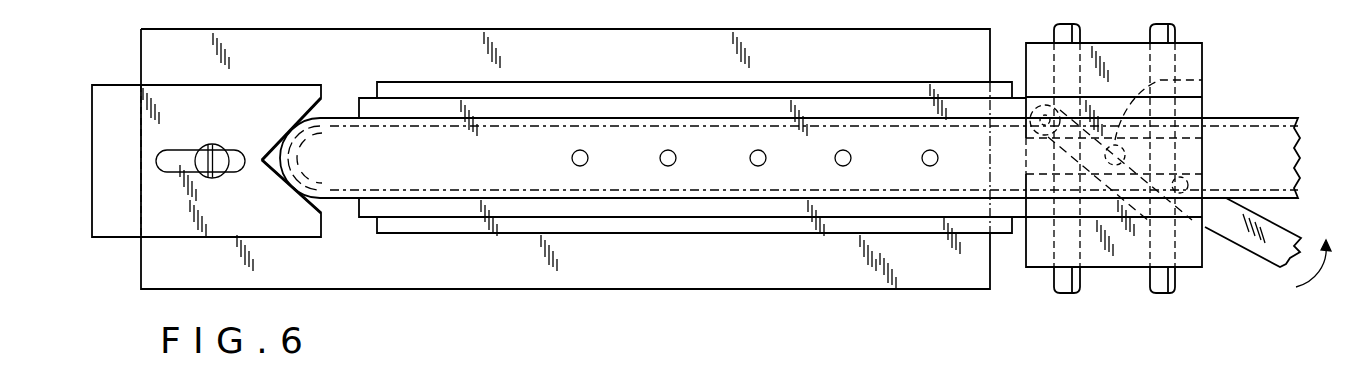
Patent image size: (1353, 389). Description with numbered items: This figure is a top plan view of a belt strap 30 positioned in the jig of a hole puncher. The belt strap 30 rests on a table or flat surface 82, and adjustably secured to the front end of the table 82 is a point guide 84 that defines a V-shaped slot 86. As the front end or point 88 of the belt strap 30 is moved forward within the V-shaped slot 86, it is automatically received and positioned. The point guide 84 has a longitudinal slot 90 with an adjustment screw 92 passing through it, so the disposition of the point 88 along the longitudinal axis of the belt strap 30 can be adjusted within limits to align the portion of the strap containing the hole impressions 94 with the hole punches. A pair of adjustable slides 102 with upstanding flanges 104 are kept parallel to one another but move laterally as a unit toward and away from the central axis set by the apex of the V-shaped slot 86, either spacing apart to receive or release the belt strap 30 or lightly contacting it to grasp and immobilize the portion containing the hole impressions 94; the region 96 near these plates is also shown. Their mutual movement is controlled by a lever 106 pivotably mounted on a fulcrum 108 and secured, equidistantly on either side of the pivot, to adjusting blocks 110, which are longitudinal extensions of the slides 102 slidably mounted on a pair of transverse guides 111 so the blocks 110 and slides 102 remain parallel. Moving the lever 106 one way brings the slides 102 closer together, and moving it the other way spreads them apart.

The belt strap 30 is at (527, 143).
The table 82 is at (303, 282).
The point guide 84 is at (115, 222).
The V-shaped slot 86 is at (282, 145).
The point 88 is at (275, 165).
The longitudinal slot 90 is at (180, 157).
The adjustment screw 92 is at (223, 157).
The hole impressions 94 is at (758, 150).
The plate assembly 96 is at (510, 227).
The adjustable slides 102 is at (768, 90).
The upstanding flanges 104 is at (450, 110).
The lever 106 is at (1235, 228).
The fulcrum 108 is at (1202, 80).
The adjusting blocks 110 is at (1186, 65).
The transverse guides 111 is at (1060, 280).